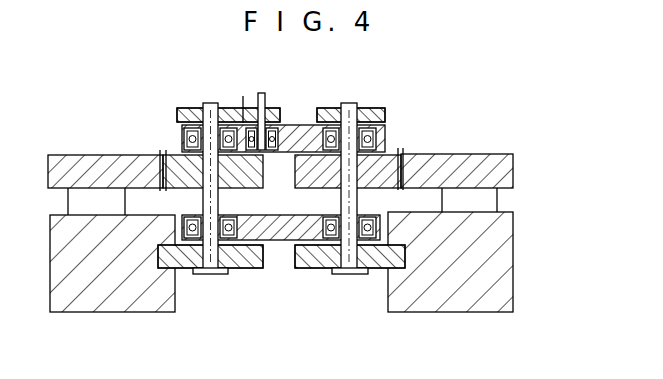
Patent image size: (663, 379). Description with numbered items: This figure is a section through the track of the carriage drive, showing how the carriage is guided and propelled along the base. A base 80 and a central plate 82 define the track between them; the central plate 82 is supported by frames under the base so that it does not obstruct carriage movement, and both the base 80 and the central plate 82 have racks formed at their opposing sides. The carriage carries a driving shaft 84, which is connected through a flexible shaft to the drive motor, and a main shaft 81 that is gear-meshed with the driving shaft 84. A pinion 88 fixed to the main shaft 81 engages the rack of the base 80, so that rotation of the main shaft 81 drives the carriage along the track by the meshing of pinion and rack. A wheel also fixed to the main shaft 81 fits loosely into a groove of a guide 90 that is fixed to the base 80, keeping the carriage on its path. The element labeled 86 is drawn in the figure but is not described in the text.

The base 80 is at (82, 167).
The main shaft 81 is at (212, 103).
The central plate 82 is at (465, 165).
The driving shaft 84 is at (263, 100).
The top plate 86 is at (197, 110).
The pinion 88 is at (178, 166).
The guide 90 is at (103, 294).